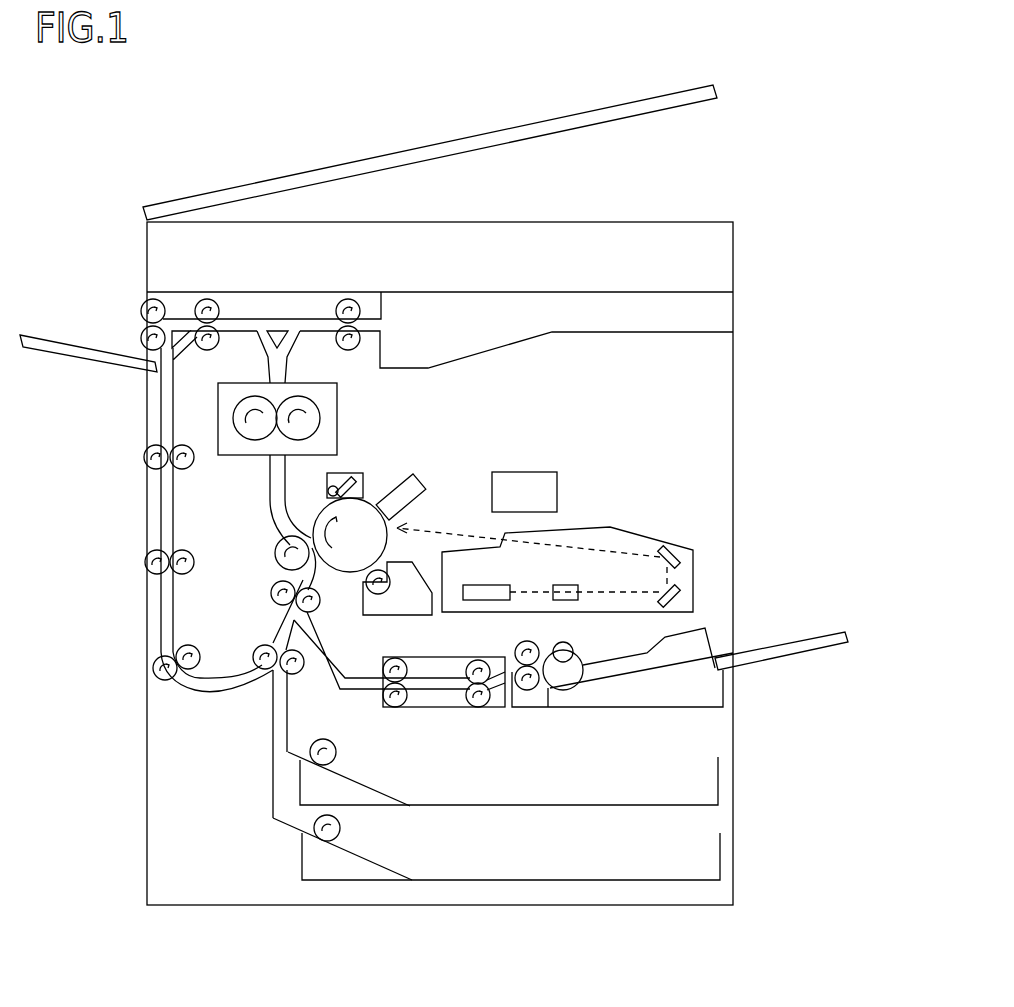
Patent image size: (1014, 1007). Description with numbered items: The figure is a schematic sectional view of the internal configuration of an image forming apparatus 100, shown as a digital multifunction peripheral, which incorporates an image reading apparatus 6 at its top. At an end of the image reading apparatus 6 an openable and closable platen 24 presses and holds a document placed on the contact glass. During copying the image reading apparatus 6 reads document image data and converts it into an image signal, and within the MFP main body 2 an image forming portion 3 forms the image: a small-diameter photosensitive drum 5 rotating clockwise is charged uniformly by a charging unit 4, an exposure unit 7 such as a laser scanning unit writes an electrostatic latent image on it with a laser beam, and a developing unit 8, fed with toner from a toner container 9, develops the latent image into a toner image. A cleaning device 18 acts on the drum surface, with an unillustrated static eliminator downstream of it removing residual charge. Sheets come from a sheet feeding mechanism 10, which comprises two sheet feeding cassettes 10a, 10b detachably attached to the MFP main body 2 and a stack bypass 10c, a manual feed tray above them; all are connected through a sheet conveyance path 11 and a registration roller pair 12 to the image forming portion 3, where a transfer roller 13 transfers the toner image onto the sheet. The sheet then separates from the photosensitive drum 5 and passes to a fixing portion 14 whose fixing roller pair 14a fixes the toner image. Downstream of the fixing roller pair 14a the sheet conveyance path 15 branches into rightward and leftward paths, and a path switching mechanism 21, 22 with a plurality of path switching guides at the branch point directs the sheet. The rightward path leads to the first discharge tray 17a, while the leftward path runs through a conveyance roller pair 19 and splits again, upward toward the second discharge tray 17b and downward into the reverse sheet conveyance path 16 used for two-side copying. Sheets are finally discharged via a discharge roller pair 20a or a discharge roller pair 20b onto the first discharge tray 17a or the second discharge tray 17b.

The image forming apparatus 100 is at (772, 230).
The MFP main body 2 is at (733, 383).
The image forming portion 3 is at (400, 457).
The charging unit 4 is at (408, 497).
The photosensitive drum 5 is at (347, 563).
The image reading apparatus 6 is at (572, 235).
The exposure unit 7 is at (592, 538).
The developing unit 8 is at (393, 610).
The toner container 9 is at (525, 478).
The sheet feeding mechanism 10 is at (752, 727).
The sheet feeding cassette 10a is at (702, 780).
The sheet feeding cassette 10b is at (705, 865).
The stack bypass 10c is at (777, 647).
The sheet conveyance path 11 is at (272, 700).
The registration roller pair 12 is at (277, 607).
The transfer roller 13 is at (273, 560).
The fixing portion 14 is at (217, 418).
The fixing roller pair 14a is at (318, 417).
The sheet conveyance path 15 is at (267, 366).
The reverse sheet conveyance path 16 is at (165, 502).
The first discharge tray 17a is at (448, 330).
The second discharge tray 17b is at (55, 347).
The cleaning device 18 is at (343, 473).
The conveyance roller pair 19 is at (212, 302).
The discharge roller pair 20a is at (356, 304).
The discharge roller pair 20b is at (138, 325).
The path switching mechanism 21 is at (277, 328).
The path switching mechanism 22 is at (168, 340).
The platen 24 is at (317, 177).